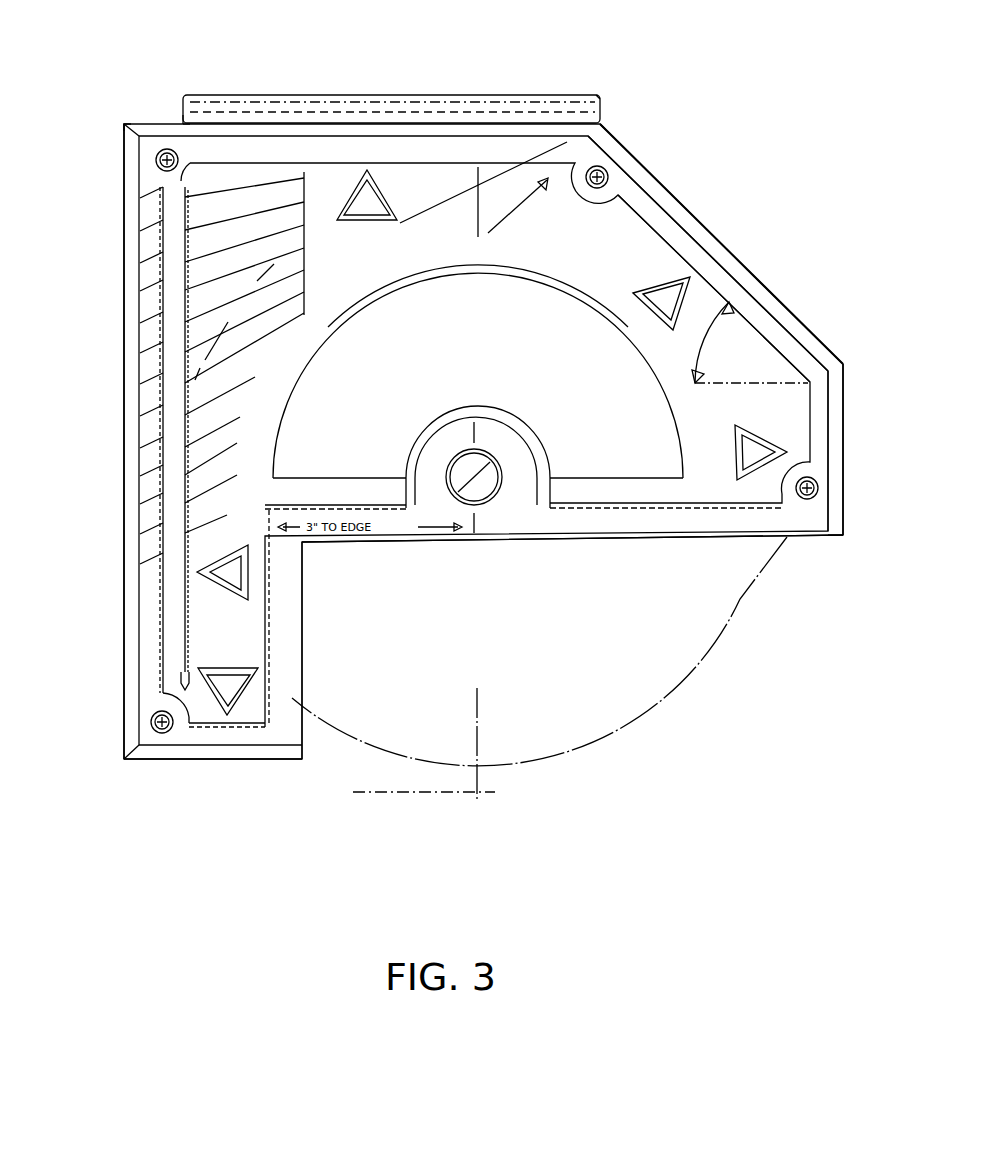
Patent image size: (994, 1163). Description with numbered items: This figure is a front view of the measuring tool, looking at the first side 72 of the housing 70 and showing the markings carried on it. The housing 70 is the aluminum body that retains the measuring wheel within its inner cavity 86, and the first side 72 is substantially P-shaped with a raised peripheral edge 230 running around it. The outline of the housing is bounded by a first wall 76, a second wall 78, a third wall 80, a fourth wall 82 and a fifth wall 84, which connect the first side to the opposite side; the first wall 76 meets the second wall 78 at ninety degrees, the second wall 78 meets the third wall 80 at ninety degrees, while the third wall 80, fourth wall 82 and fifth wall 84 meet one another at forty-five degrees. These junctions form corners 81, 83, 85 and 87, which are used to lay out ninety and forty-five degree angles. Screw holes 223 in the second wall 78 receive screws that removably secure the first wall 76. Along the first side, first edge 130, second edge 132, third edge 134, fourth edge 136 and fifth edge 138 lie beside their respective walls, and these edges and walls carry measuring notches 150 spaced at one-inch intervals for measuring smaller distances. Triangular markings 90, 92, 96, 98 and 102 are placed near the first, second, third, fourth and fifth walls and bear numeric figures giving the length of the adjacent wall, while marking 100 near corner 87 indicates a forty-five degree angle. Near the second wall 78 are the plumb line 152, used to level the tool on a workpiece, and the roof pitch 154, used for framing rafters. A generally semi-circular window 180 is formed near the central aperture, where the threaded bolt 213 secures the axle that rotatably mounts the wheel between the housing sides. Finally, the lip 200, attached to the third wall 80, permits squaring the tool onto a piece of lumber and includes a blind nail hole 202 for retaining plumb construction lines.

The housing 70 is at (700, 226).
The first side 72 is at (680, 200).
The first wall 76 is at (168, 760).
The second wall 78 is at (126, 700).
The third wall 80 is at (145, 120).
The corner 81 is at (124, 762).
The fourth wall 82 is at (602, 172).
The corner 83 is at (127, 122).
The fifth wall 84 is at (848, 538).
The corner 85 is at (606, 121).
The inner cavity 86 is at (787, 540).
The corner 87 is at (843, 362).
The marking 90 is at (218, 722).
The marking 92 is at (230, 603).
The marking 96 is at (410, 176).
The marking 98 is at (690, 295).
The marking 100 is at (737, 347).
The marking 102 is at (790, 450).
The first edge 130 is at (302, 760).
The second edge 132 is at (136, 525).
The third edge 134 is at (160, 120).
The fourth edge 136 is at (700, 215).
The fifth edge 138 is at (845, 474).
The measuring notches 150 is at (120, 585).
The plumb line 152 is at (185, 605).
The roof pitch 154 is at (220, 298).
The window 180 is at (655, 440).
The lip 200 is at (222, 118).
The blind nail hole 202 is at (600, 92).
The threaded bolt 213 is at (483, 485).
The screw holes 223 is at (158, 165).
The raised peripheral edge 230 is at (264, 728).